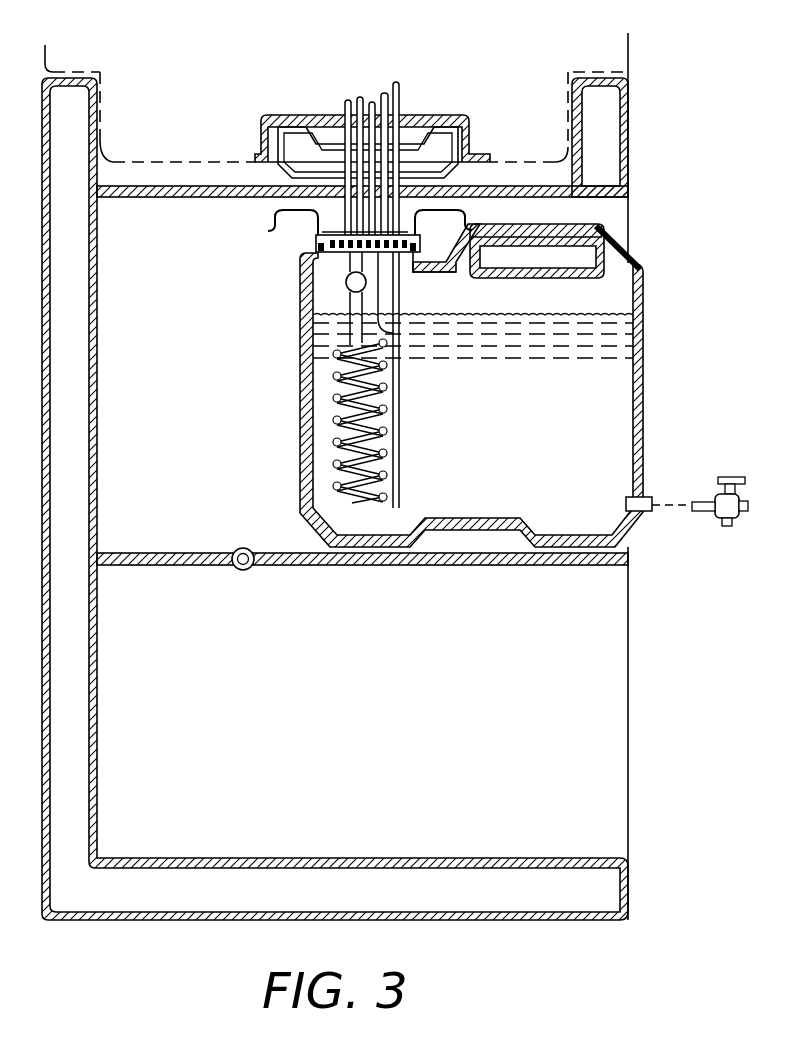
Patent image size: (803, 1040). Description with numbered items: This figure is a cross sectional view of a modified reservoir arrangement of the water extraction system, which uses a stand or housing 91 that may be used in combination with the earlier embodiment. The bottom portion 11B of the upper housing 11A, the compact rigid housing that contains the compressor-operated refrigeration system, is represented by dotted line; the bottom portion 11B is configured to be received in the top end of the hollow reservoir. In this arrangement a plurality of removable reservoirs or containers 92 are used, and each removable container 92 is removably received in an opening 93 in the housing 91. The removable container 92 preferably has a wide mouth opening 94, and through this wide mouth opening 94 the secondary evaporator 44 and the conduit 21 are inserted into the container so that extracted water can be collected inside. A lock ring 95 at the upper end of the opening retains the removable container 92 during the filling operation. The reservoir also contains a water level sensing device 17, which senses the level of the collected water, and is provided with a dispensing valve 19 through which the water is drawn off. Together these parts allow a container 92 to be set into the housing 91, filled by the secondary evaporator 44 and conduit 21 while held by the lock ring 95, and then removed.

The upper housing 11A is at (628, 66).
The bottom portion of the upper housing 11B is at (203, 162).
The water level sensing device 17 is at (350, 289).
The dispensing valve 19 is at (728, 477).
The conduit 21 is at (390, 280).
The secondary evaporator 44 is at (335, 380).
The stand or housing 91 is at (97, 475).
The removable reservoir or container 92 is at (641, 374).
The opening in the housing 93 is at (604, 195).
The wide mouth opening 94 is at (322, 254).
The lock ring 95 is at (268, 224).